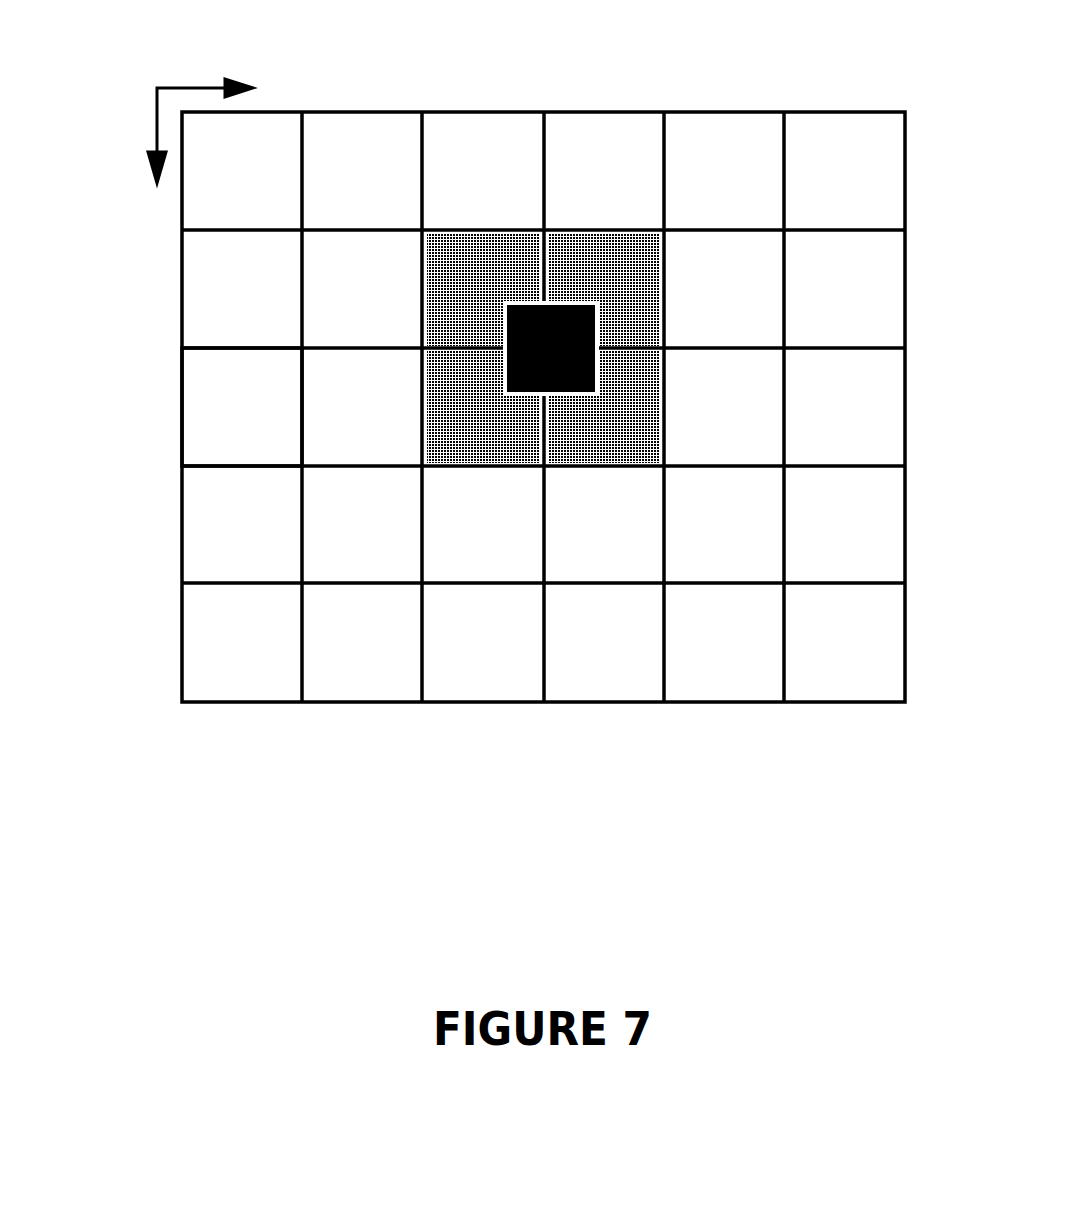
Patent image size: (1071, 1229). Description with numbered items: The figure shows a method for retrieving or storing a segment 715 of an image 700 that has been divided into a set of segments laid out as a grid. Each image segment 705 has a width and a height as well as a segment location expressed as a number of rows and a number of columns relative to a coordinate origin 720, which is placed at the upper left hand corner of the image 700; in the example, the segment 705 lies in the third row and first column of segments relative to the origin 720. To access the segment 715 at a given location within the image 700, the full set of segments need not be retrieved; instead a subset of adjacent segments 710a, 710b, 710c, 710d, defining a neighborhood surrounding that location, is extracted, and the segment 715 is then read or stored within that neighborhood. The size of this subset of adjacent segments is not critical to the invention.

The image 700 is at (572, 763).
The image segment 705 is at (230, 422).
The adjacent segment 710a is at (483, 289).
The adjacent segment 710b is at (604, 289).
The adjacent segment 710c is at (483, 407).
The adjacent segment 710d is at (604, 407).
The segment 715 is at (597, 338).
The coordinate origin 720 is at (148, 65).